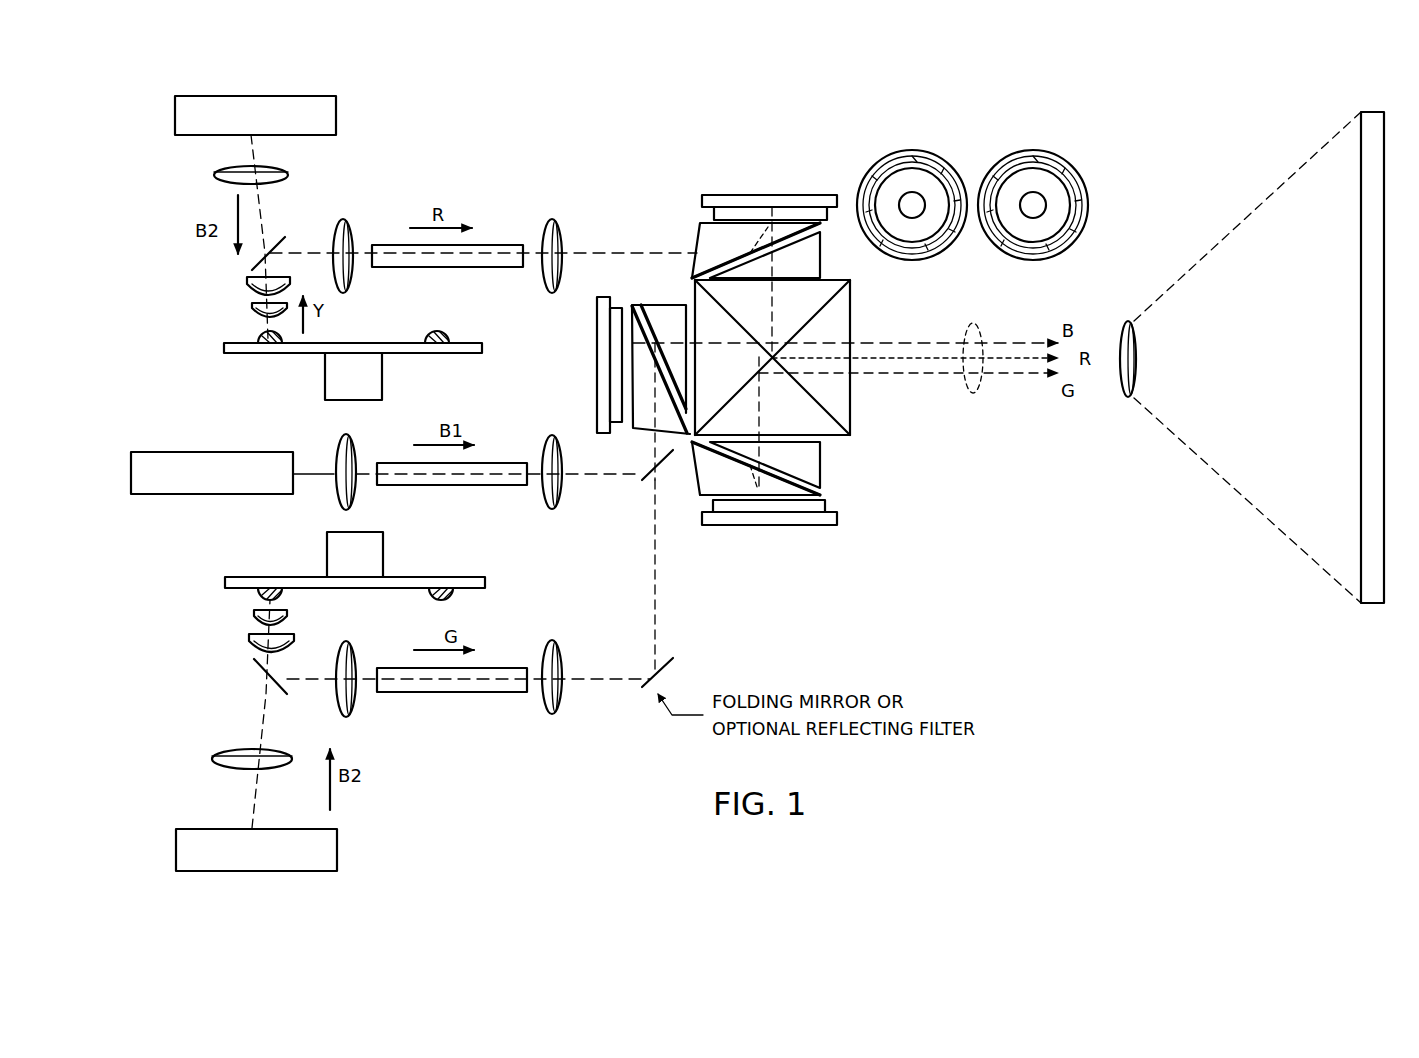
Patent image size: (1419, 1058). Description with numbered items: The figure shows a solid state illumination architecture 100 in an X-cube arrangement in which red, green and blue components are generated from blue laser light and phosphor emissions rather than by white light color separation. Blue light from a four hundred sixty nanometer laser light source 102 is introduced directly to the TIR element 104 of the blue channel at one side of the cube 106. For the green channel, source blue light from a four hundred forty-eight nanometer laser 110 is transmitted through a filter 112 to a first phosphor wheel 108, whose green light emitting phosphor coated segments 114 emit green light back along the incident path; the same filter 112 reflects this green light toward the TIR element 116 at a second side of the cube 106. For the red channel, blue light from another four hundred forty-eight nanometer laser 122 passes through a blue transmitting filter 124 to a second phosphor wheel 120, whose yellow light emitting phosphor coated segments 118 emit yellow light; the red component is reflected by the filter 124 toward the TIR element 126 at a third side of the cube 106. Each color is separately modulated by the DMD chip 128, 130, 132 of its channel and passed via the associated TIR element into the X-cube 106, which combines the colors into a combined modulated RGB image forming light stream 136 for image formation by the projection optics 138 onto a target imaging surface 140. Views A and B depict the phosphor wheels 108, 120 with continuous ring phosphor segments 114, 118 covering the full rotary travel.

The SSI architecture 100 is at (670, 122).
The 460 nm wavelength laser light source 102 is at (212, 496).
The TIR element of the blue channel 104 is at (647, 430).
The X-cube 106 is at (851, 400).
The first phosphor wheel 108 is at (439, 576).
The 448 nm wavelength laser 110 is at (337, 848).
The filter 112 is at (265, 676).
The green light emitting phosphor coated segments 114 is at (250, 608).
The TIR element of the green channel 116 is at (695, 484).
The yellow light emitting phosphor coated segments 118 is at (253, 338).
The second phosphor wheel 120 is at (432, 356).
The 448 nm wavelength laser 122 is at (336, 112).
The filter 124 is at (283, 240).
The TIR element of the red channel 126 is at (697, 242).
The DMD chip 128 is at (597, 362).
The DMD chip 130 is at (770, 525).
The DMD chip 132 is at (770, 195).
The combined modulated RGB image forming light stream 136 is at (973, 323).
The projection optics 138 is at (1128, 400).
The target imaging surface 140 is at (1372, 112).